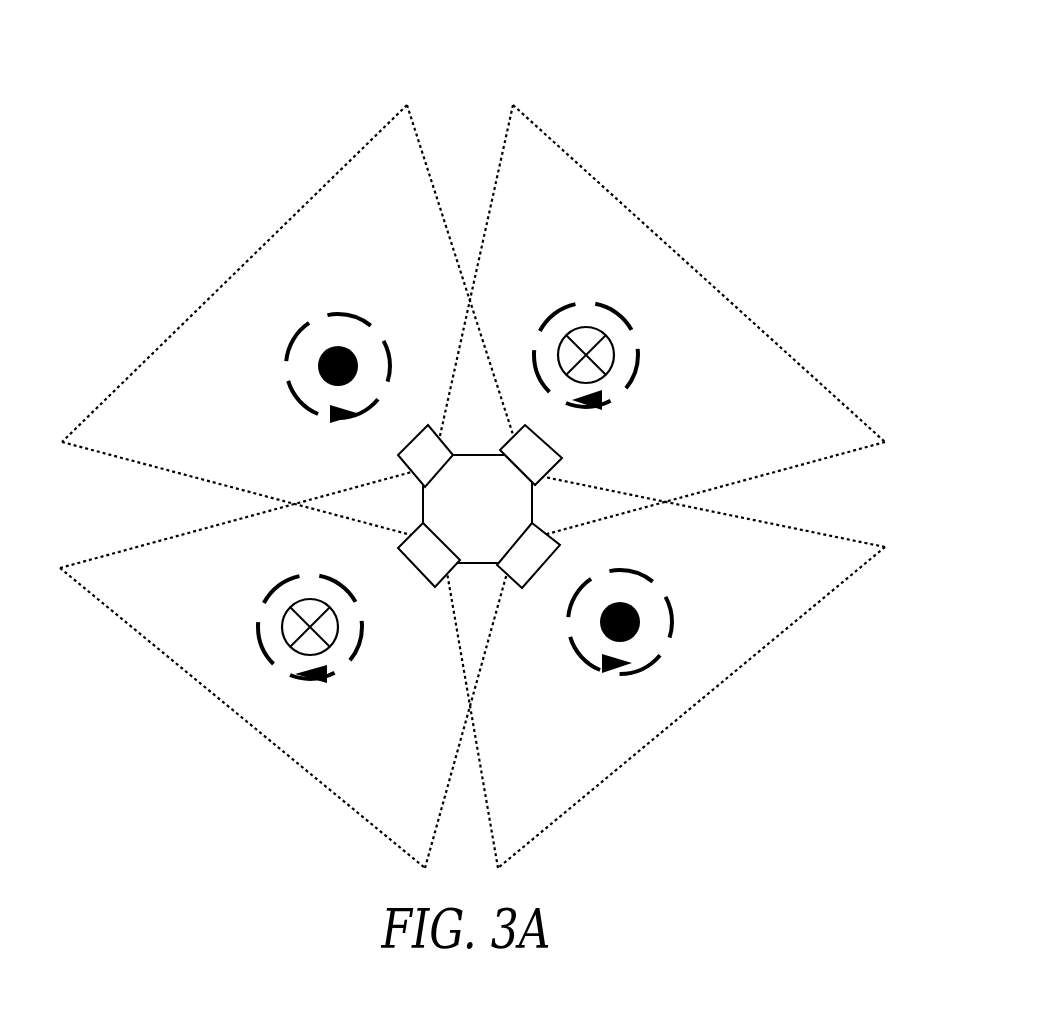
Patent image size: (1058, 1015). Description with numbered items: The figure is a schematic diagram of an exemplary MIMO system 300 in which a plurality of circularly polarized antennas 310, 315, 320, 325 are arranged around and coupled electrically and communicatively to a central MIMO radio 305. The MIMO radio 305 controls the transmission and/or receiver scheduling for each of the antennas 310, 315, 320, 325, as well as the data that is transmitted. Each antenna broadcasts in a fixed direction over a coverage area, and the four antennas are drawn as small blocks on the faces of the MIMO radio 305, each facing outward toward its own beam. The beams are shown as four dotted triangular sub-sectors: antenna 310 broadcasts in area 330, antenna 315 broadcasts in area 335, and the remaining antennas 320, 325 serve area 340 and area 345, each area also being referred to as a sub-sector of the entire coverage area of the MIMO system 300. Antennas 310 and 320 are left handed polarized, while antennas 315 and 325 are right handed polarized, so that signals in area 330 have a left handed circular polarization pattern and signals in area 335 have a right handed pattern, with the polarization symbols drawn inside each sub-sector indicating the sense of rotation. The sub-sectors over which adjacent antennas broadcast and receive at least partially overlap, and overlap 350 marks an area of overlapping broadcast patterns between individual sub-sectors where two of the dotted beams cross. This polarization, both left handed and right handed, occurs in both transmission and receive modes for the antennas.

The MIMO system 300 is at (768, 97).
The MIMO radio 305 is at (460, 547).
The antenna 310 is at (399, 473).
The antenna 315 is at (553, 458).
The antenna 320 is at (521, 578).
The antenna 325 is at (432, 563).
The area 330 is at (377, 292).
The area 335 is at (543, 292).
The area 340 is at (217, 564).
The area 345 is at (702, 564).
The overlap 350 is at (500, 316).